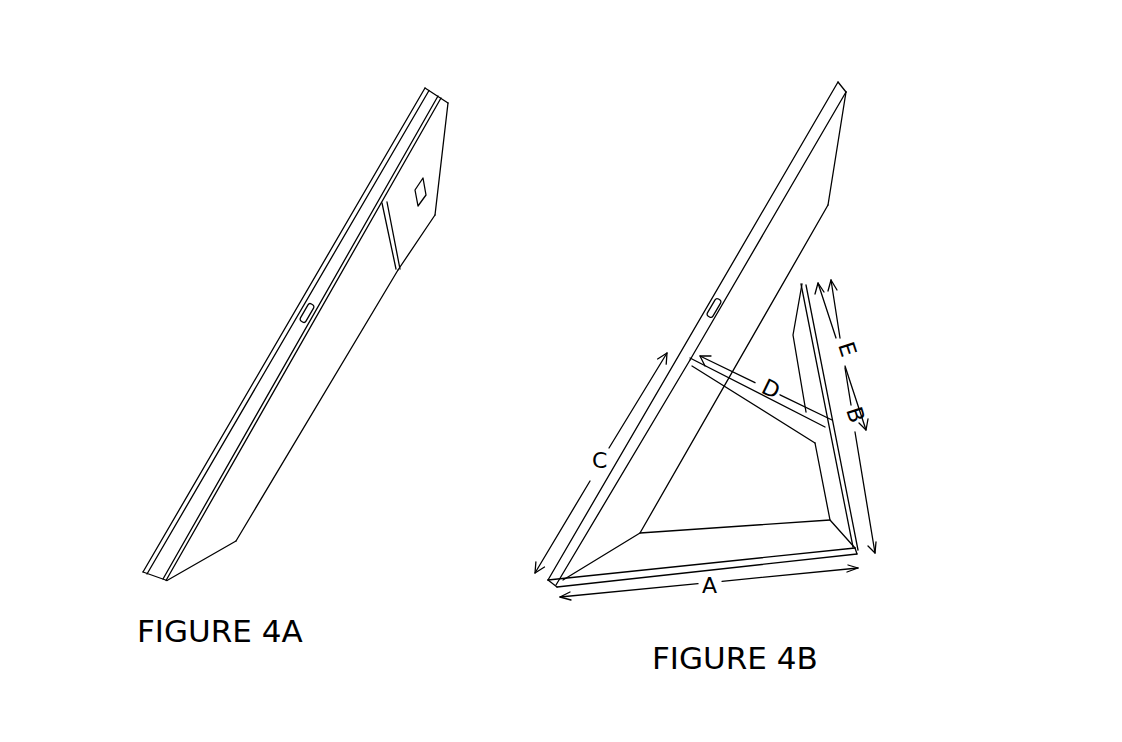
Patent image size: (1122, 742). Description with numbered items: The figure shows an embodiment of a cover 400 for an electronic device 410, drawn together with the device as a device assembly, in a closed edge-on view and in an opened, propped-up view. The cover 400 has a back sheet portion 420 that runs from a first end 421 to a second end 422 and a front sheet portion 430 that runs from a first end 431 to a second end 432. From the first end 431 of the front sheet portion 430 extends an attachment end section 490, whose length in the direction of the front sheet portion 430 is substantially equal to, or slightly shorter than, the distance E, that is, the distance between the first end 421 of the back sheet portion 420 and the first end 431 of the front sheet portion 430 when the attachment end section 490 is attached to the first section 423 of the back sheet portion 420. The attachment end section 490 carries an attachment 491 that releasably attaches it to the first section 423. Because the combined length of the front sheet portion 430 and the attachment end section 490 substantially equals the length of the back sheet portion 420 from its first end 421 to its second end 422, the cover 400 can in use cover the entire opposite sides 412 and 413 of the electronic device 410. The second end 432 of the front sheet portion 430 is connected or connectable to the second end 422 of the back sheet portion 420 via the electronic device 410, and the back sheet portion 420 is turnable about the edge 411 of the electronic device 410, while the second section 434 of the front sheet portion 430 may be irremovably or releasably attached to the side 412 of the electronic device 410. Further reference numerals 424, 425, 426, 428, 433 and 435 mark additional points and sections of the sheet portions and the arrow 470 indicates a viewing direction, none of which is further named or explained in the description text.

In FIG. 4A, the cover 400 is at (365, 147).
In FIG. 4B, the cover 400 is at (883, 281).
In FIG. 4A, the electronic device 410 is at (223, 455).
In FIG. 4B, the electronic device 410 is at (733, 273).
In FIG. 4A, the edge of the electronic device 411 is at (160, 580).
In FIG. 4B, the edge of the electronic device 411 is at (547, 583).
In FIG. 4A, the side of the electronic device 412 is at (413, 163).
In FIG. 4B, the side of the electronic device 412 is at (785, 240).
In FIG. 4A, the opposite side of the electronic device 413 is at (326, 260).
In FIG. 4B, the opposite side of the electronic device 413 is at (763, 193).
In FIG. 4A, the back sheet portion 420 is at (270, 358).
In FIG. 4B, the back sheet portion 420 is at (747, 572).
In FIG. 4A, the first end of the back sheet portion 421 is at (424, 86).
In FIG. 4B, the first end of the back sheet portion 421 is at (801, 273).
In FIG. 4A, the second end of the back sheet portion 422 is at (143, 570).
In FIG. 4B, the second end of the back sheet portion 422 is at (545, 585).
In FIG. 4A, the first section of the back sheet portion 423 is at (372, 177).
In FIG. 4B, the first section of the back sheet portion 423 is at (843, 493).
In FIG. 4A, the front edge line 424 is at (197, 478).
In FIG. 4B, the front edge line 424 is at (607, 583).
In FIG. 4B, the support region 425 is at (800, 340).
In FIG. 4A, the button / corner 426 is at (303, 304).
In FIG. 4B, the button / corner 426 is at (856, 555).
In FIG. 4A, the stand corner 428 is at (400, 262).
In FIG. 4B, the stand corner 428 is at (852, 432).
In FIG. 4A, the front sheet portion 430 is at (282, 452).
In FIG. 4B, the front sheet portion 430 is at (670, 450).
In FIG. 4A, the first end of the front sheet portion 431 is at (393, 267).
In FIG. 4B, the first end of the front sheet portion 431 is at (833, 457).
In FIG. 4A, the second end of the front sheet portion 432 is at (203, 558).
In FIG. 4B, the second end of the front sheet portion 432 is at (588, 563).
In FIG. 4A, the stand hinge edge 433 is at (375, 288).
In FIG. 4B, the stand hinge edge 433 is at (757, 400).
In FIG. 4A, the second section of the front sheet portion 434 is at (305, 407).
In FIG. 4B, the second section of the front sheet portion 434 is at (610, 523).
In FIG. 4A, the stand hinge 435 is at (362, 317).
In FIG. 4B, the stand hinge 435 is at (693, 350).
In FIG. 4A, the viewing direction arrow 470 is at (237, 190).
In FIG. 4B, the viewing direction arrow 470 is at (629, 237).
In FIG. 4A, the attachment end section 490 is at (428, 222).
In FIG. 4B, the attachment end section 490 is at (813, 403).
In FIG. 4A, the attachment 491 is at (425, 184).